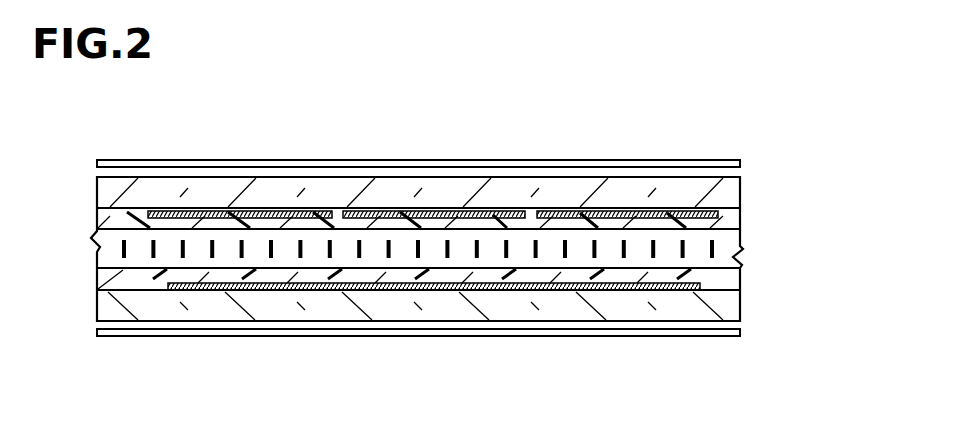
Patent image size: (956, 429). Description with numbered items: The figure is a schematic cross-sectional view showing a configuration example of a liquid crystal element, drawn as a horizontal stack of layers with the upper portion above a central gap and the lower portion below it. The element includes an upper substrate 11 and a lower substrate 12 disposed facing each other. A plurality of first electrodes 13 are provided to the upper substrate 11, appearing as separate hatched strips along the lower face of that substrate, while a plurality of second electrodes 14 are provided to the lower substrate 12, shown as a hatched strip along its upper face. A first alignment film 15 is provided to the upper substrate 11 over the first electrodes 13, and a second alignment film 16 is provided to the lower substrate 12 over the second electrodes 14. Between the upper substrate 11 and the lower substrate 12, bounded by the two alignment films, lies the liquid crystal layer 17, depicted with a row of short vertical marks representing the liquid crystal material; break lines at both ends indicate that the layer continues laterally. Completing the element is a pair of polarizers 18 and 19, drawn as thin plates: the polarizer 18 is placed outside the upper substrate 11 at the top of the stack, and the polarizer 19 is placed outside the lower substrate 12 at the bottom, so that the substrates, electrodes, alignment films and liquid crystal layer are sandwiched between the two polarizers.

The upper substrate 11 is at (742, 192).
The lower substrate 12 is at (742, 307).
The first electrodes 13 is at (270, 211).
The second electrodes 14 is at (343, 292).
The first alignment film 15 is at (742, 218).
The second alignment film 16 is at (742, 283).
The liquid crystal layer 17 is at (744, 249).
The polarizer 18 is at (742, 164).
The polarizer 19 is at (742, 334).